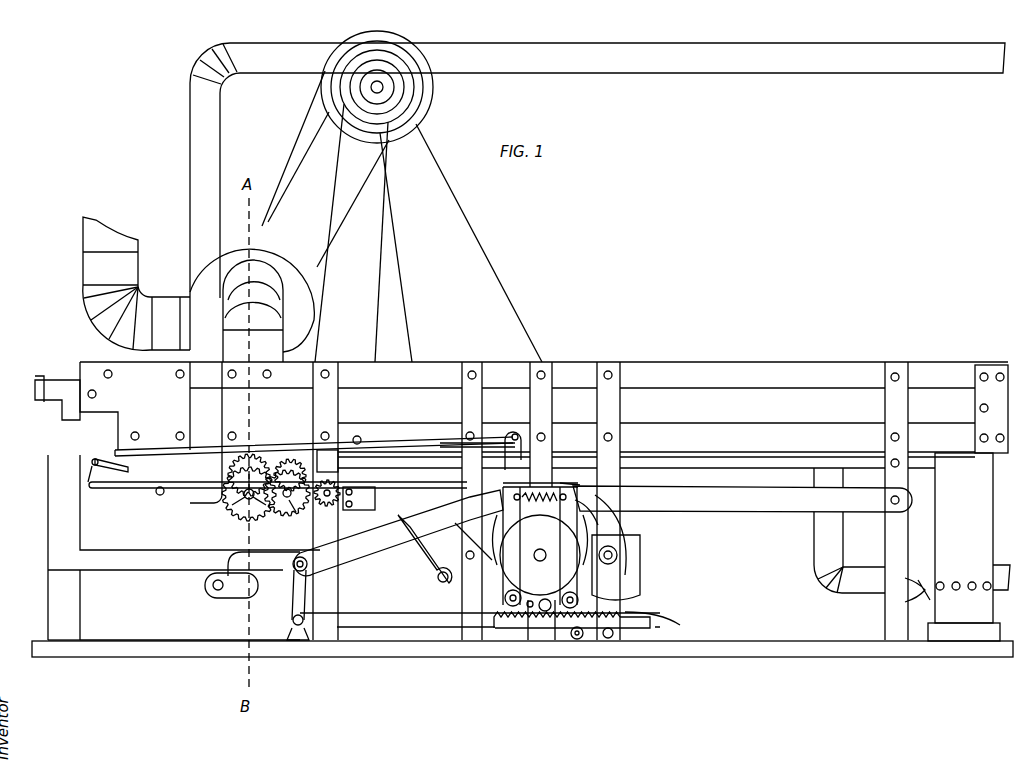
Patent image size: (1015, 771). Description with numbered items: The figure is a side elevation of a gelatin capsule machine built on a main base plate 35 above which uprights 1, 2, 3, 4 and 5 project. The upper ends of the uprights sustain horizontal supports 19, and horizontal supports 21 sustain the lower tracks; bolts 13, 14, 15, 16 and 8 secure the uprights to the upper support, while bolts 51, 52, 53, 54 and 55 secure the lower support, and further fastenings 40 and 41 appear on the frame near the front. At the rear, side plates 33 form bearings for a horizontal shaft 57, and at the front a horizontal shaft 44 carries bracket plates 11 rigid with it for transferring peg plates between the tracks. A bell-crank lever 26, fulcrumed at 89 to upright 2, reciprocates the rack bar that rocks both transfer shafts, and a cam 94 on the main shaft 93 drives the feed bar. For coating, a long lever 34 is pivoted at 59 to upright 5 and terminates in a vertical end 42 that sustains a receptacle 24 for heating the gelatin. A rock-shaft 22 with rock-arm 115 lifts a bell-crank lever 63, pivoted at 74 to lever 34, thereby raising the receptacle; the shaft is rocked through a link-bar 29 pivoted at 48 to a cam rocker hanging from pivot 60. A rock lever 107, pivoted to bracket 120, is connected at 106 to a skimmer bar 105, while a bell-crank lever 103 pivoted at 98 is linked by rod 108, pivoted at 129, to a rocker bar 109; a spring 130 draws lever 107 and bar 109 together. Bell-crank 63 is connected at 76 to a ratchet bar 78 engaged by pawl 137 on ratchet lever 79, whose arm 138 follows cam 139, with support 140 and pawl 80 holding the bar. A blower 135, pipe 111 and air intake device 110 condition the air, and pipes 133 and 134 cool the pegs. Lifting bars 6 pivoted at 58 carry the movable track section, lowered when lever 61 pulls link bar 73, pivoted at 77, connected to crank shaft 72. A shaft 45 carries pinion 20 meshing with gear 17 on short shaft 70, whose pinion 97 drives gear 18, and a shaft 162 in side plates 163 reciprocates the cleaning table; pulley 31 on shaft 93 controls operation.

The upright 1 is at (323, 363).
The upright 2 is at (468, 368).
The upright 3 is at (544, 371).
The upright 4 is at (608, 370).
The upright 5 is at (897, 372).
The lifting bars 6 is at (740, 505).
The bolt 8 is at (899, 375).
The bracket plates 11 is at (72, 412).
The bolt 13 is at (328, 371).
The bolt 14 is at (475, 372).
The bolt 15 is at (545, 372).
The bolt 16 is at (611, 372).
The gear 17 is at (289, 460).
The gear 18 is at (247, 467).
The upper horizontal supports 19 is at (745, 370).
The pinion 20 is at (359, 498).
The lower horizontal supports 21 is at (738, 436).
The rock-shaft 22 is at (215, 589).
The horizontal receptacle 24 is at (55, 475).
The bell-crank lever 26 is at (457, 523).
The link-bar 29 is at (418, 630).
The driving pulley 31 is at (628, 562).
The side plates 33 is at (991, 409).
The long lever 34 is at (697, 498).
The main base plate 35 is at (833, 650).
The block 40 is at (206, 432).
The bolt 41 is at (230, 377).
The vertically-projecting end 42 is at (60, 553).
The horizontal shaft 44 is at (92, 390).
The shaft 45 is at (327, 502).
The pivot 48 is at (577, 640).
The bolt 51 is at (325, 419).
The bolt 52 is at (480, 452).
The bolt 53 is at (541, 433).
The bolt 54 is at (608, 433).
The bolt 55 is at (898, 435).
The horizontal shaft 57 is at (985, 404).
The pivot 58 is at (898, 466).
The pivot 59 is at (893, 503).
The pivot 60 is at (618, 561).
The lever 61 is at (497, 605).
The bell-crank lever 63 is at (262, 566).
The short shaft 70 is at (284, 499).
The crank shaft 72 is at (357, 436).
The link bar 73 is at (432, 558).
The pivot 74 is at (313, 572).
The pivot 76 is at (298, 630).
The pivot 77 is at (439, 586).
The ratchet bar 78 is at (447, 586).
The ratchet lever 79 is at (612, 578).
The pawl 80 is at (550, 620).
The pivot 89 is at (470, 560).
The main shaft 93 is at (540, 562).
The cam 94 is at (292, 348).
The pinion 97 is at (294, 503).
The pivot 98 is at (92, 460).
The bell-crank lever 103 is at (90, 472).
The skimmer bar 105 is at (155, 445).
The pivot 106 is at (513, 437).
The rock lever 107 is at (500, 437).
The rod 108 is at (135, 489).
The rocker bar 109 is at (580, 520).
The air intake device 110 is at (965, 572).
The pipe 111 is at (247, 310).
The rock-arm 115 is at (238, 590).
The bracket 120 is at (528, 610).
The pivot 129 is at (568, 497).
The spring 130 is at (557, 470).
The pipe 133 is at (1000, 590).
The pipe 134 is at (202, 148).
The blower 135 is at (210, 303).
The pawl 137 is at (655, 608).
The arm 138 is at (542, 558).
The cam 139 is at (540, 544).
The movable track section 140 is at (608, 638).
The horizontal shaft 162 is at (222, 500).
The side plates 163 is at (190, 629).